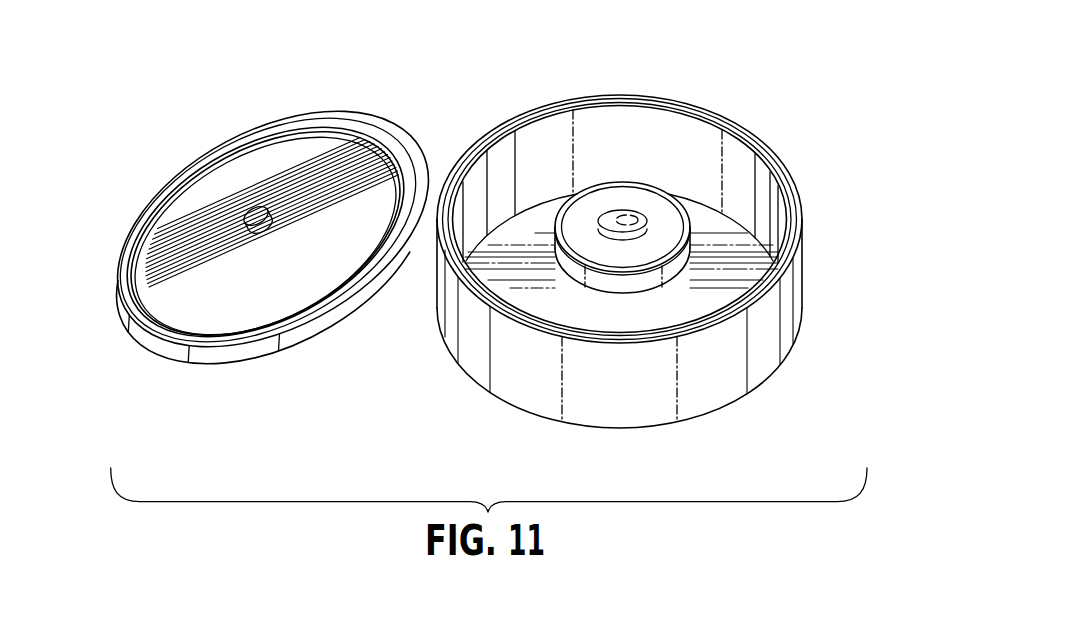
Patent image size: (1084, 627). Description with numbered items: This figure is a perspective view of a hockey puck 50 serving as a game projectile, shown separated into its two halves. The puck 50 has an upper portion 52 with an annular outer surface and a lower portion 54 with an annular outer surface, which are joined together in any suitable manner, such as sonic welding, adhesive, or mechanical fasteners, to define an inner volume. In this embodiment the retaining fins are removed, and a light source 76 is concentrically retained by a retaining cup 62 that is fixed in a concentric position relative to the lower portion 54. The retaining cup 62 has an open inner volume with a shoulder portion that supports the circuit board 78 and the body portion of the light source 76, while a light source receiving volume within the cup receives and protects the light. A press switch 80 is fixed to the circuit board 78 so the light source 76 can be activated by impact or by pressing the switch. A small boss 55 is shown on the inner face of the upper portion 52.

The hockey puck 50 is at (464, 84).
The upper portion 52 is at (282, 288).
The lower portion 54 is at (625, 128).
The lid boss 55 is at (251, 212).
The retaining cup 62 is at (644, 185).
The light source 76 is at (607, 260).
The circuit board 78 is at (578, 216).
The press switch 80 is at (621, 213).